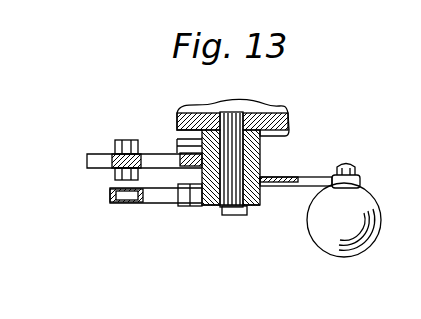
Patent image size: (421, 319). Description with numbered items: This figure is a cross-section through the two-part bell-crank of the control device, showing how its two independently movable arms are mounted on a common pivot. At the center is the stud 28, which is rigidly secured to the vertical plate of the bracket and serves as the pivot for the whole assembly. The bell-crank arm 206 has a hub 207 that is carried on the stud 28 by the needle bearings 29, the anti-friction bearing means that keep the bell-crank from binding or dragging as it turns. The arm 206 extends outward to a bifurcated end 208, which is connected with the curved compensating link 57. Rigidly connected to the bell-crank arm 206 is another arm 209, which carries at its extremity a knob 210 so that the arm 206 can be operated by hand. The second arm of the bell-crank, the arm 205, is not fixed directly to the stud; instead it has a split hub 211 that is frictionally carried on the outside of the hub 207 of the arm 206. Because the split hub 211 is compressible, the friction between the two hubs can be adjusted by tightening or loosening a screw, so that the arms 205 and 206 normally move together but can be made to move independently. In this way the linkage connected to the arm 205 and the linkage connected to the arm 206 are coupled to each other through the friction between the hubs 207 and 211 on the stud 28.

The stud 28 is at (228, 163).
The anti-friction bearing means 29 is at (192, 151).
The curved compensating link 57 is at (112, 198).
The bell-crank arm 205 is at (98, 156).
The bell-crank arm 206 is at (196, 217).
The hub 207 is at (262, 190).
The bifurcated end 208 is at (172, 205).
The arm 209 is at (318, 177).
The knob 210 is at (328, 251).
The split hub 211 is at (200, 172).